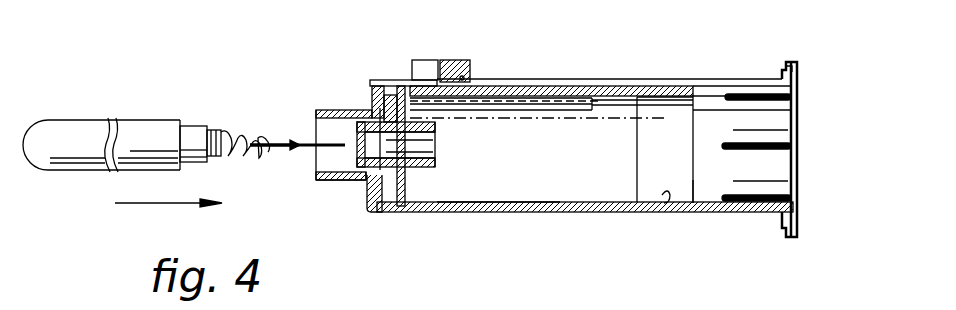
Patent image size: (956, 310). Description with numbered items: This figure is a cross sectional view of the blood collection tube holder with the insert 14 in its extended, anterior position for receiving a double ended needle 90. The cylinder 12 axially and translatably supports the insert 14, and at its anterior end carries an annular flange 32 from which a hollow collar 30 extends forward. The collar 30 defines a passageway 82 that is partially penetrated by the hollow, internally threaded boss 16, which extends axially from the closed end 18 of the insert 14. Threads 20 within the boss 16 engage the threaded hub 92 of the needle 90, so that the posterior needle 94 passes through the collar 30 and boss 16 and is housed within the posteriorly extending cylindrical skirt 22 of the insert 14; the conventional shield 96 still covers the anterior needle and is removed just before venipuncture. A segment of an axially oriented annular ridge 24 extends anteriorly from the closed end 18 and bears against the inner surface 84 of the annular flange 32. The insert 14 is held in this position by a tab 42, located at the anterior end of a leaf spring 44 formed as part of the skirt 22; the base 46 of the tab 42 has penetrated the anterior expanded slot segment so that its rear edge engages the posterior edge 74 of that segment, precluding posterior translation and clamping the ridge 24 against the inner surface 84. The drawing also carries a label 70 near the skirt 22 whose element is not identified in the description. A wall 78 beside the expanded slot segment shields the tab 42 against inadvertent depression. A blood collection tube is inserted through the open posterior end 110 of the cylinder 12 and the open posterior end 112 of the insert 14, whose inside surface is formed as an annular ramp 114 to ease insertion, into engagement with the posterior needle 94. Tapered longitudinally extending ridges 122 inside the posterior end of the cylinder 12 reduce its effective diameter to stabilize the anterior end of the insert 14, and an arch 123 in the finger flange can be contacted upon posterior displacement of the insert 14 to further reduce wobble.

The cylinder 12 is at (560, 214).
The insert 14 is at (547, 192).
The boss 16 is at (364, 180).
The closed end 18 is at (406, 194).
The threads 20 is at (382, 148).
The skirt 22 is at (492, 214).
The annular ridge 24 is at (394, 206).
The collar 30 is at (332, 108).
The annular flange 32 is at (340, 92).
The tab 42 is at (465, 78).
The leaf spring 44 is at (546, 98).
The base 46 is at (444, 76).
The plunger 70 is at (560, 106).
The posterior edge 74 is at (504, 100).
The wall 78 is at (428, 60).
The passageway 82 is at (340, 176).
The inner surface 84 is at (374, 202).
The double ended needle 90 is at (199, 124).
The threaded hub 92 is at (235, 160).
The posterior needle 94 is at (275, 134).
The shield 96 is at (152, 120).
The open posterior end 110 is at (785, 163).
The open posterior end 112 is at (694, 186).
The annular ramp 114 is at (666, 204).
The tapered ridges 122 is at (775, 136).
The arch 123 is at (794, 70).